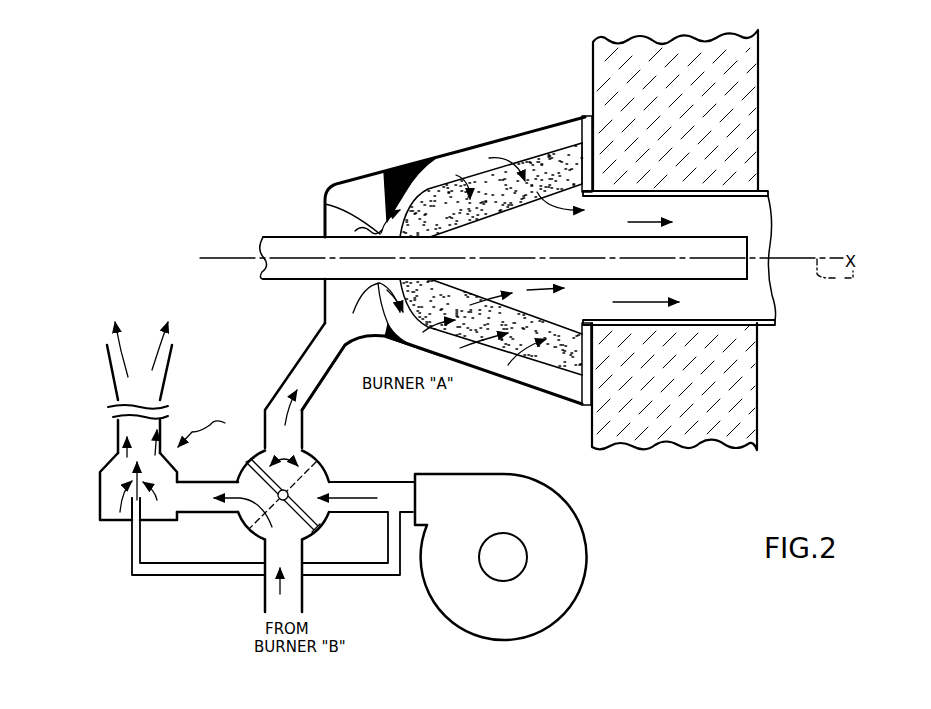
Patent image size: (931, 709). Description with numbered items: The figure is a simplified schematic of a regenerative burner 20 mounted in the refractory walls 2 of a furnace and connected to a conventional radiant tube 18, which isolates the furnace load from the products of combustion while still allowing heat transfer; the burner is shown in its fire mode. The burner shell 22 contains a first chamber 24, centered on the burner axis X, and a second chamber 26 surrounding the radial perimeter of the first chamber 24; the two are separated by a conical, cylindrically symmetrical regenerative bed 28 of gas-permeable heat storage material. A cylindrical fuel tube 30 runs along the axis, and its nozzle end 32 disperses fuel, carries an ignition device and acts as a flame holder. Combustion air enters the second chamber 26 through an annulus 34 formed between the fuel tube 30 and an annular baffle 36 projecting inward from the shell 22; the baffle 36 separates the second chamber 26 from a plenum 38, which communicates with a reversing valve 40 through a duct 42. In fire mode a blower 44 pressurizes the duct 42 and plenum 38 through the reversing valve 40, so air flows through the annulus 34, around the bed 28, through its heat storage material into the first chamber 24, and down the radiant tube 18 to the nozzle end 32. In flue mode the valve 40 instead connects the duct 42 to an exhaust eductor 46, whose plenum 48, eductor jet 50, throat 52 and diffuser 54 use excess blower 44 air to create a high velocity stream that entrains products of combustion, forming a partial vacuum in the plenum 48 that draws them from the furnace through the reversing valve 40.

The walls 2 is at (703, 116).
The radiant tube 18 is at (768, 192).
The regenerative burner 20 is at (421, 91).
The burner shell 22 is at (490, 142).
The first chamber 24 is at (574, 248).
The second chamber 26 is at (491, 252).
The regenerative bed 28 is at (590, 162).
The fuel tube 30 is at (313, 279).
The nozzle end 32 is at (752, 243).
The annulus 34 is at (325, 204).
The annular baffle 36 is at (386, 185).
The plenum 38 is at (365, 200).
The reversing valve 40 is at (318, 461).
The duct 42 is at (290, 362).
The blower 44 is at (585, 557).
The exhaust eductor 46 is at (214, 429).
The plenum 48 is at (118, 520).
The eductor jet 50 is at (142, 508).
The throat 52 is at (118, 422).
The diffuser 54 is at (167, 367).